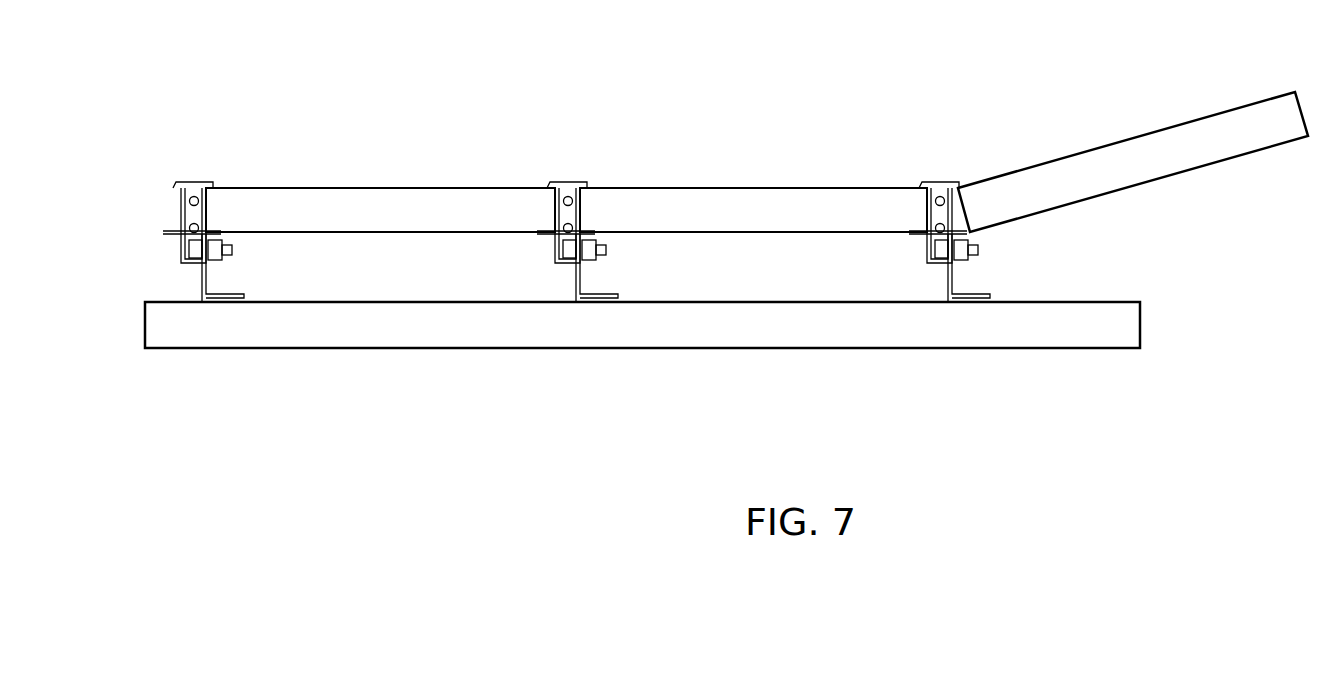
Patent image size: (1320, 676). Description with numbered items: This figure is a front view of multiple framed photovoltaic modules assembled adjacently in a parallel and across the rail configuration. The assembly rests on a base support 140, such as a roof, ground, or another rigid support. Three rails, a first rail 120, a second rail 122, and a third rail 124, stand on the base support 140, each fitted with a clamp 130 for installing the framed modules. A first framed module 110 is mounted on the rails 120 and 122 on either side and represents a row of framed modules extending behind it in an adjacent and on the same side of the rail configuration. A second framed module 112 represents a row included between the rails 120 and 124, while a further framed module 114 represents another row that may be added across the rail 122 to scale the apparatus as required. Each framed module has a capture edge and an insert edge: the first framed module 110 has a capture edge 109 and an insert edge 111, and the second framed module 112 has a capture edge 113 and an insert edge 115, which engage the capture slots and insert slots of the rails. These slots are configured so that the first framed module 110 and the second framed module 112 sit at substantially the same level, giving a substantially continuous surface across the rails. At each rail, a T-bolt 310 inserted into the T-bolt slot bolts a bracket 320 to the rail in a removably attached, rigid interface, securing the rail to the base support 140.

The capture edge 109 is at (903, 187).
The first framed photovoltaic module 110 is at (753, 212).
The insert edge 111 is at (597, 188).
The second framed photovoltaic module 112 is at (380, 205).
The capture edge 113 is at (530, 187).
The framed module 114 is at (1142, 150).
The insert edge 115 is at (228, 186).
The first rail 120 is at (568, 334).
The second rail 122 is at (920, 248).
The third rail 124 is at (173, 248).
The first clamp 130 is at (192, 186).
The base support 140 is at (480, 333).
The T-bolt 310 is at (600, 255).
The bracket 320 is at (578, 278).